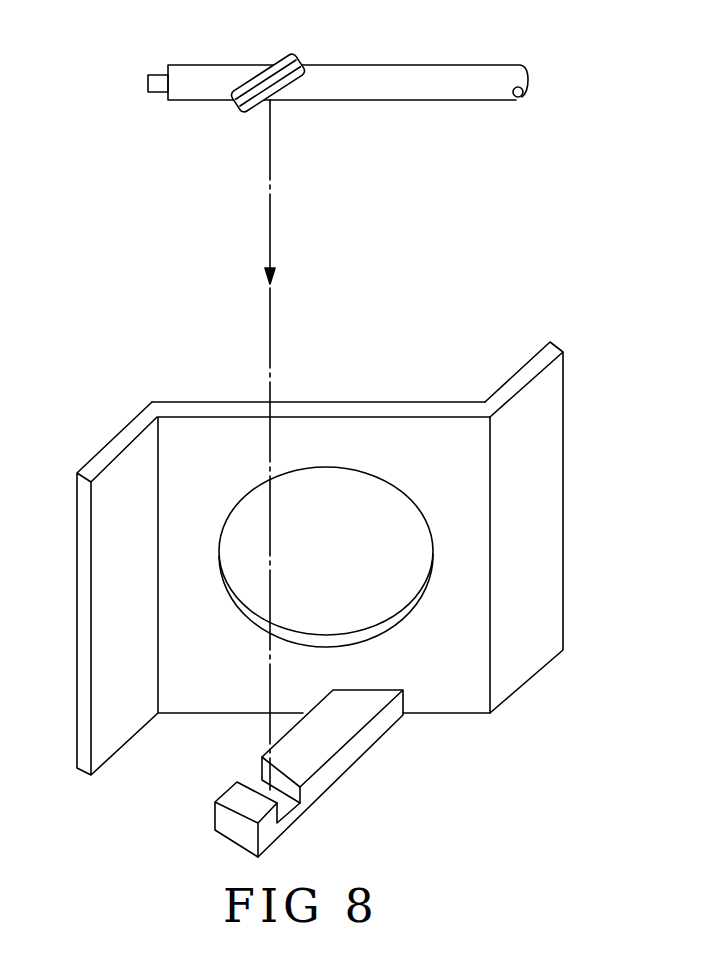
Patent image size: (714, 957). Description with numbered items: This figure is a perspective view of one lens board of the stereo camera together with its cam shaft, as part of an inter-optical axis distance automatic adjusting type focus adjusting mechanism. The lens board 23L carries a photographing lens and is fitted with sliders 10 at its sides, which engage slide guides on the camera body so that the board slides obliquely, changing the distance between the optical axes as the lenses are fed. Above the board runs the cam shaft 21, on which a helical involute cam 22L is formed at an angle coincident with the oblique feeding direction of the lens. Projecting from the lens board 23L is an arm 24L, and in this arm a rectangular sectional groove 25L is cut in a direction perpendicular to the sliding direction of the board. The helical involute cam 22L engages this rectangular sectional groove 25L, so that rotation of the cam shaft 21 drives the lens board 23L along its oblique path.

The slider 10 is at (110, 442).
The cam shaft 21 is at (452, 82).
The helical involute cam 22L is at (290, 62).
The lens board 23L is at (193, 403).
The arm 24L is at (343, 760).
The rectangular sectional groove 25L is at (285, 803).